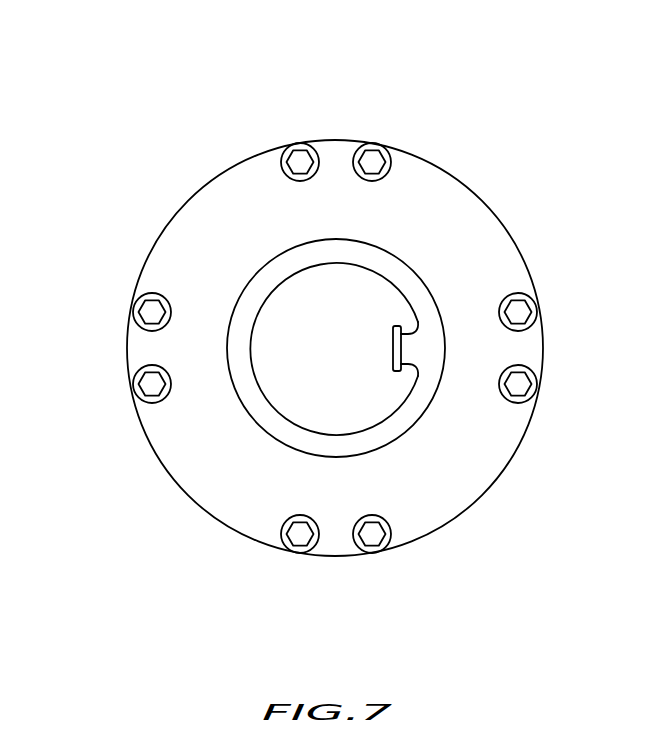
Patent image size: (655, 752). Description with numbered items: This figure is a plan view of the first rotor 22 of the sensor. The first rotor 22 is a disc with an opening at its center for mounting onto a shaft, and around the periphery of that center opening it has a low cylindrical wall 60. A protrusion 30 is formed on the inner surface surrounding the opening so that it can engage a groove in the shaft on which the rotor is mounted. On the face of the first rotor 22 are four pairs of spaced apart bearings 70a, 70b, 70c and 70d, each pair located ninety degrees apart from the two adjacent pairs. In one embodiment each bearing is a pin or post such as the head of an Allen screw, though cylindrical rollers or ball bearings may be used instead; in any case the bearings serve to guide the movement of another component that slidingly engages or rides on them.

The first rotor 22 is at (190, 197).
The protrusion 30 is at (393, 349).
The low cylindrical wall 60 is at (418, 421).
The bearing 70a is at (150, 310).
The bearing 70b is at (298, 158).
The bearing 70c is at (522, 311).
The bearing 70d is at (372, 535).